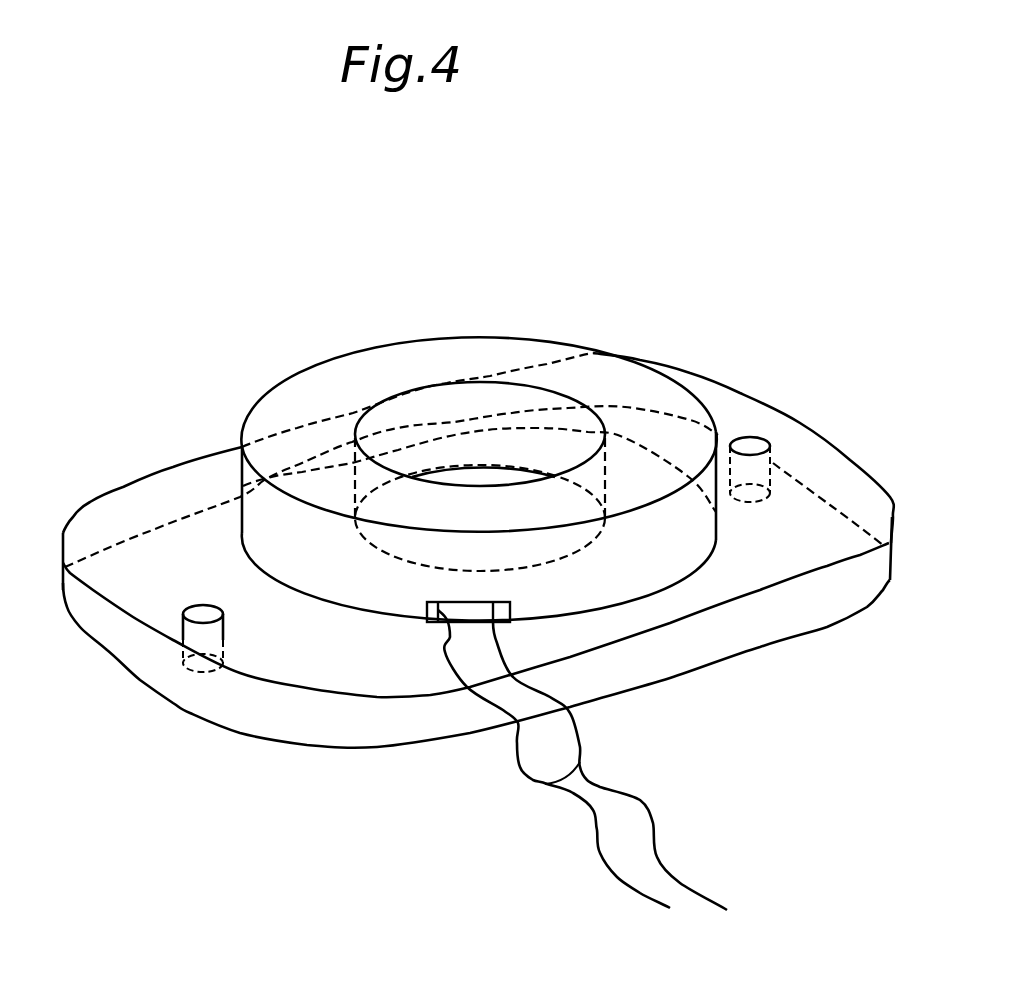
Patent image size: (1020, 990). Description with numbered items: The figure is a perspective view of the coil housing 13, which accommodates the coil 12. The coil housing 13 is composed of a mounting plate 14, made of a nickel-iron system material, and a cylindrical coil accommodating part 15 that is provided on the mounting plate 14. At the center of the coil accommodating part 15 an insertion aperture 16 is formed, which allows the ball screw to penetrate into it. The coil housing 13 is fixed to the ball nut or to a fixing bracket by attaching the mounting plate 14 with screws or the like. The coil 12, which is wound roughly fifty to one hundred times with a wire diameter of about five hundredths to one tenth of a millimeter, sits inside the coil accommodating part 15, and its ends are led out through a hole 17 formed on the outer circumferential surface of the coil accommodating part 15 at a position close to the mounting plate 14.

The coil 12 is at (545, 784).
The coil housing 13 is at (634, 253).
The mounting plate 14 is at (795, 425).
The coil accommodating part 15 is at (608, 348).
The insertion aperture 16 is at (460, 398).
The hole 17 is at (436, 612).